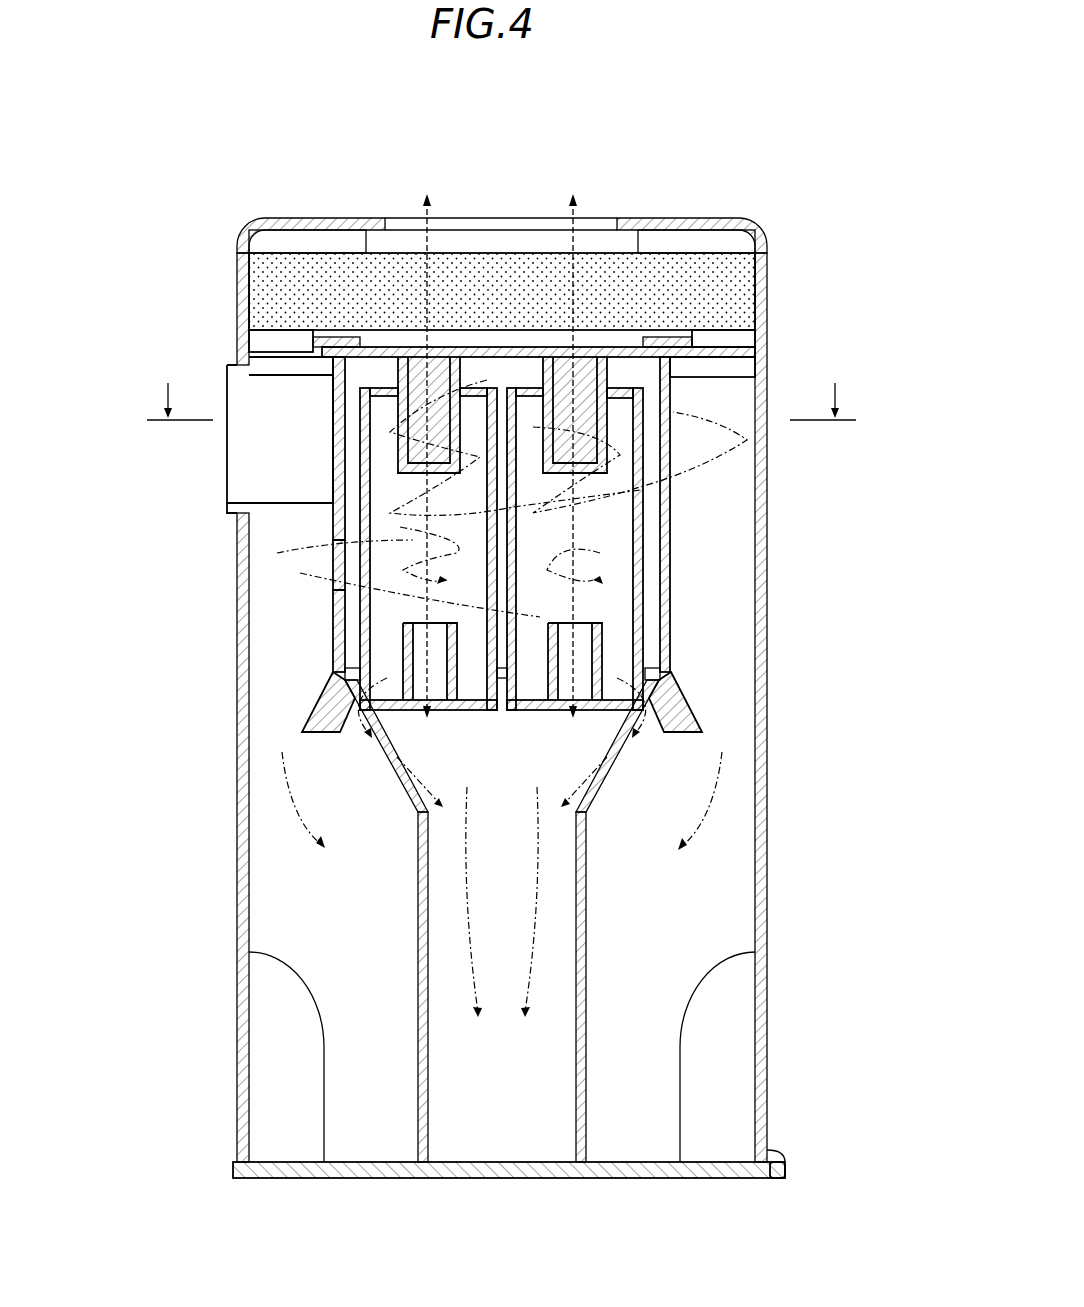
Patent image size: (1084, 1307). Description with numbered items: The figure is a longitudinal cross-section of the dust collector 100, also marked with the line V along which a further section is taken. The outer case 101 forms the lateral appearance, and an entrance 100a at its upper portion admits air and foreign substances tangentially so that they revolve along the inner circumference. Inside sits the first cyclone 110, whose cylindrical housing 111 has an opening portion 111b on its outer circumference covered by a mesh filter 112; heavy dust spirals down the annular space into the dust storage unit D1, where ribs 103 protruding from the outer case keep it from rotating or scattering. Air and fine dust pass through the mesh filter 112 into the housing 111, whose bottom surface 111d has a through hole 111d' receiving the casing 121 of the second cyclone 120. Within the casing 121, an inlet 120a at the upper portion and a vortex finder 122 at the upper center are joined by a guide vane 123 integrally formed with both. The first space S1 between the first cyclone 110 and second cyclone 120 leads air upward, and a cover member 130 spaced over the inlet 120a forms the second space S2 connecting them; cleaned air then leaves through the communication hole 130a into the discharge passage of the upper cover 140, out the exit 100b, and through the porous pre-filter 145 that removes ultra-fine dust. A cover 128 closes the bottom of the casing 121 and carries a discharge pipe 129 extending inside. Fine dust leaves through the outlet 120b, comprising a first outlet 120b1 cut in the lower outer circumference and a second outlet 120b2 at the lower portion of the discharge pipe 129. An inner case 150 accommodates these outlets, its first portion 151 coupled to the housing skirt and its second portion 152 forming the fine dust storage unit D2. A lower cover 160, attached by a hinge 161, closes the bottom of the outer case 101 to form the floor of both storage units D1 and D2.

The dust collector 100 is at (788, 170).
The entrance 100a is at (257, 472).
The exit 100b is at (463, 222).
The outer case 101 is at (770, 500).
The ribs for dust collection 103 is at (288, 1113).
The first cyclone 110 is at (132, 518).
The housing 111 is at (335, 497).
The opening portion 111b is at (337, 566).
The mesh filter 112 is at (333, 602).
The bottom surface 111d is at (250, 700).
The through hole 111d' is at (299, 661).
The second cyclone 120 is at (403, 150).
The inlet 120a is at (345, 455).
The outlet 120b is at (867, 657).
The first outlet 120b1 is at (655, 680).
The second outlet 120b2 is at (692, 732).
The casing 121 is at (381, 437).
The vortex finder 122 is at (403, 400).
The guide vane 123 is at (337, 442).
The cover 128 is at (512, 712).
The discharge pipe 129 is at (665, 608).
The cover member 130 is at (614, 371).
The communication hole 130a is at (558, 352).
The upper cover 140 is at (662, 218).
The porous pre-filter 145 is at (734, 283).
The inner case 150 is at (845, 800).
The first portion 151 is at (600, 785).
The second portion 152 is at (587, 922).
The lower cover 160 is at (556, 1168).
The hinge 161 is at (786, 1168).
The dust storage unit D1 is at (366, 1116).
The fine dust storage unit D2 is at (486, 1116).
The first space S1 is at (649, 426).
The second space S2 is at (669, 344).
The line V- V is at (501, 388).